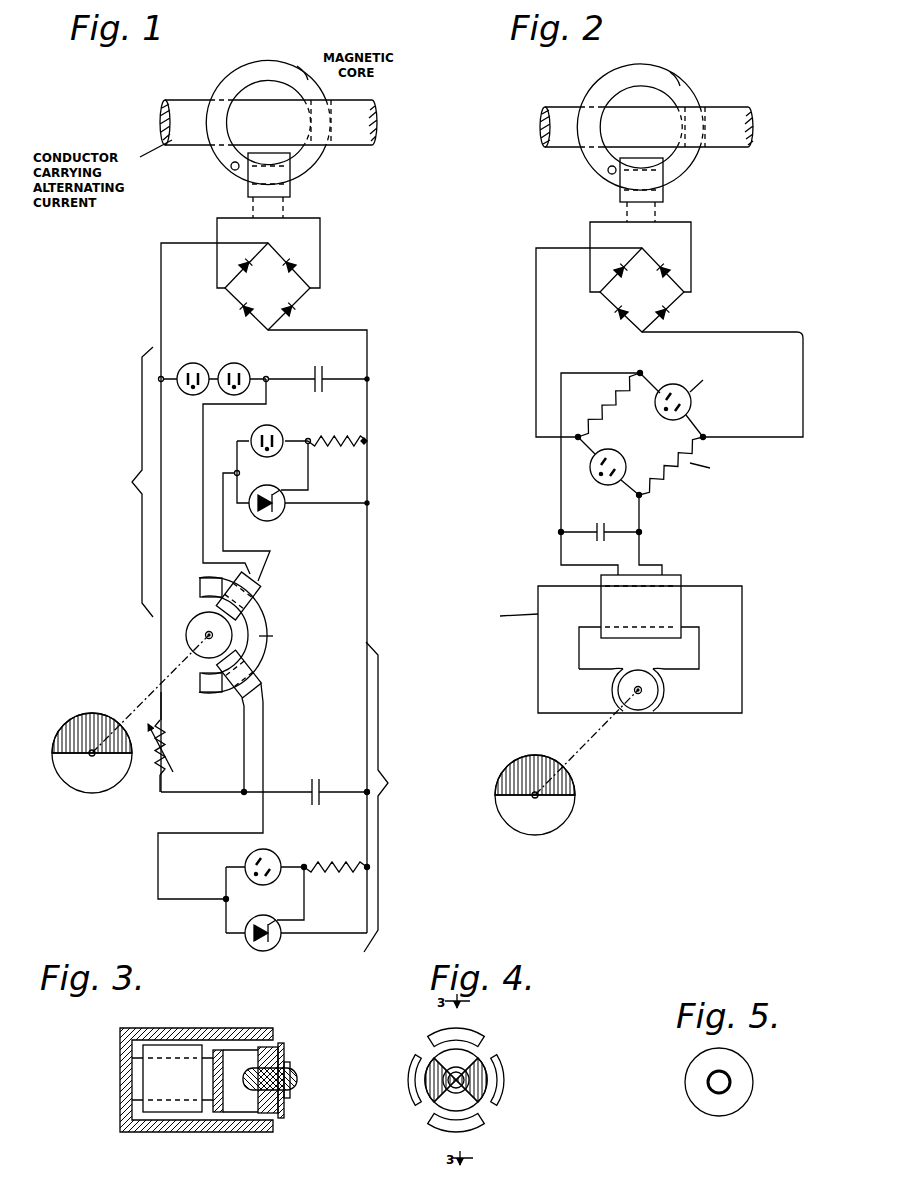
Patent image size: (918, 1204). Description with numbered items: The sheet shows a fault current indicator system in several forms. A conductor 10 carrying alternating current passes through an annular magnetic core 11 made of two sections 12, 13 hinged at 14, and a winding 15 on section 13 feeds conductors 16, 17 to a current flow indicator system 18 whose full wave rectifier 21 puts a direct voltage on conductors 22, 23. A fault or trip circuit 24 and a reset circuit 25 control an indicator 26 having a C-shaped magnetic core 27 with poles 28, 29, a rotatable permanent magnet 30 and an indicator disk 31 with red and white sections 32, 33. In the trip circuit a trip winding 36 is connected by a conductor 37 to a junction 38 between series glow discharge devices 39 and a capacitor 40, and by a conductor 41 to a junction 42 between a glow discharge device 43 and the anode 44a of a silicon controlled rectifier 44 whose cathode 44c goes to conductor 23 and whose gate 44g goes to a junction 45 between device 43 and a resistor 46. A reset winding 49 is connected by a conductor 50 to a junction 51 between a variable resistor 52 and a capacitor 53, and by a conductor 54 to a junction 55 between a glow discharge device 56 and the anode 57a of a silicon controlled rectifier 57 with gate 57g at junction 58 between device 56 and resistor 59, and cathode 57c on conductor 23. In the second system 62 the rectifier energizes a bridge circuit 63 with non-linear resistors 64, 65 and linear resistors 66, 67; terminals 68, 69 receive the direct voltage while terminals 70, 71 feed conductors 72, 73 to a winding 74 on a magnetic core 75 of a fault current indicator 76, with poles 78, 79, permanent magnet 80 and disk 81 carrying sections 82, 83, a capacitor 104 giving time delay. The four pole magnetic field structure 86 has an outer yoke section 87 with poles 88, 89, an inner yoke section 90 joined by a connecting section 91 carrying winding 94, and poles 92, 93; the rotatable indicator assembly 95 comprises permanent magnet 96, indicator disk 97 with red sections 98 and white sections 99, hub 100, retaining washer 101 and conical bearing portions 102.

In FIG. 1, the conductor 10 is at (180, 108).
In FIG. 2, the conductor 10 is at (726, 107).
In FIG. 1, the annular magnetic core 11 is at (244, 42).
In FIG. 2, the annular magnetic core 11 is at (586, 80).
In FIG. 1, the core section 12 is at (277, 62).
In FIG. 2, the core section 12 is at (666, 72).
In FIG. 1, the core section 13 is at (315, 158).
In FIG. 2, the core section 13 is at (684, 162).
In FIG. 1, the hinge 14 is at (231, 168).
In FIG. 2, the hinge 14 is at (607, 174).
In FIG. 1, the winding 15 is at (292, 192).
In FIG. 2, the winding 15 is at (665, 191).
In FIG. 1, the conductor 16 is at (217, 228).
In FIG. 2, the conductor 16 is at (590, 232).
In FIG. 1, the conductor 17 is at (320, 232).
In FIG. 2, the conductor 17 is at (692, 240).
In FIG. 1, the current flow indicator system 18 is at (371, 300).
In FIG. 1, the full wave rectifier 21 is at (301, 303).
In FIG. 2, the full wave rectifier 21 is at (681, 306).
In FIG. 1, the conductor 22 is at (159, 288).
In FIG. 2, the conductor 22 is at (535, 304).
In FIG. 1, the conductor 23 is at (370, 410).
In FIG. 2, the conductor 23 is at (760, 336).
In FIG. 1, the fault or trip circuit 24 is at (125, 425).
In FIG. 1, the reset circuit 25 is at (397, 742).
In FIG. 1, the indicator 26 is at (156, 639).
In FIG. 1, the magnetic core 27 is at (265, 659).
In FIG. 1, the pole 28 is at (200, 585).
In FIG. 1, the pole 29 is at (200, 688).
In FIG. 1, the permanent magnet 30 is at (186, 626).
In FIG. 1, the indicator disk 31 is at (89, 796).
In FIG. 1, the red section 32 is at (80, 729).
In FIG. 1, the white section 33 is at (72, 768).
In FIG. 1, the trip winding 36 is at (262, 585).
In FIG. 1, the conductor 37 is at (203, 464).
In FIG. 1, the junction 38 is at (268, 376).
In FIG. 1, the glow discharge devices 39 is at (228, 365).
In FIG. 1, the capacitor 40 is at (320, 367).
In FIG. 1, the conductor 41 is at (222, 480).
In FIG. 1, the junction 42 is at (240, 474).
In FIG. 1, the glow discharge device 43 is at (278, 432).
In FIG. 1, the silicon controlled rectifier 44 is at (280, 532).
In FIG. 1, the anode 44a is at (256, 508).
In FIG. 1, the cathode 44c is at (285, 512).
In FIG. 1, the gate 44g is at (272, 497).
In FIG. 1, the junction 45 is at (311, 444).
In FIG. 1, the resistor 46 is at (337, 437).
In FIG. 1, the reset winding 49 is at (265, 689).
In FIG. 1, the conductor 50 is at (243, 738).
In FIG. 1, the junction 51 is at (242, 795).
In FIG. 1, the variable resistor 52 is at (167, 751).
In FIG. 1, the capacitor 53 is at (316, 778).
In FIG. 1, the conductor 54 is at (265, 748).
In FIG. 1, the junction 55 is at (223, 897).
In FIG. 1, the glow discharge device 56 is at (272, 856).
In FIG. 1, the silicon controlled rectifier 57 is at (248, 948).
In FIG. 1, the anode 57a is at (246, 893).
In FIG. 1, the gate 57g is at (276, 919).
In FIG. 1, the cathode 57c is at (283, 946).
In FIG. 1, the junction 58 is at (307, 863).
In FIG. 1, the resistor 59 is at (338, 876).
In FIG. 2, the current flow indicator system 62 is at (757, 264).
In FIG. 2, the bridge circuit 63 is at (584, 368).
In FIG. 2, the non-linear resistor 64 is at (668, 385).
In FIG. 2, the non-linear resistor 65 is at (601, 484).
In FIG. 2, the linear resistor 66 is at (596, 410).
In FIG. 2, the linear resistor 67 is at (666, 472).
In FIG. 2, the bridge terminal 68 is at (582, 437).
In FIG. 2, the bridge terminal 69 is at (705, 435).
In FIG. 2, the bridge terminal 70 is at (637, 372).
In FIG. 2, the bridge terminal 71 is at (640, 490).
In FIG. 2, the conductor 72 is at (559, 494).
In FIG. 2, the conductor 73 is at (655, 566).
In FIG. 2, the winding 74 is at (672, 597).
In FIG. 2, the magnetic core 75 is at (737, 608).
In FIG. 2, the fault current indicator 76 is at (745, 656).
In FIG. 2, the pole 78 is at (603, 668).
In FIG. 2, the pole 79 is at (682, 668).
In FIG. 2, the permanent magnet 80 is at (645, 710).
In FIG. 2, the indicator disk 81 is at (577, 813).
In FIG. 2, the red section 82 is at (530, 766).
In FIG. 2, the white section 83 is at (546, 826).
In FIG. 3, the magnetic field structure 86 is at (114, 1132).
In FIG. 3, the outer yoke section 87 is at (128, 1030).
In FIG. 3, the pole 88 is at (272, 1033).
In FIG. 4, the pole 88 is at (476, 1032).
In FIG. 3, the pole 89 is at (270, 1134).
In FIG. 4, the pole 89 is at (446, 1132).
In FIG. 3, the inner yoke section 90 is at (213, 1115).
In FIG. 3, the connecting section 91 is at (135, 1070).
In FIG. 4, the pole 92 is at (414, 1096).
In FIG. 3, the pole 93 is at (236, 1105).
In FIG. 4, the pole 93 is at (500, 1098).
In FIG. 3, the winding 94 is at (192, 1045).
In FIG. 3, the rotatable indicator assembly 95 is at (293, 1100).
In FIG. 4, the rotatable indicator assembly 95 is at (487, 1115).
In FIG. 3, the permanent magnet 96 is at (266, 1122).
In FIG. 4, the permanent magnet 96 is at (456, 1080).
In FIG. 5, the permanent magnet 96 is at (695, 1105).
In FIG. 3, the indicator disk 97 is at (285, 1052).
In FIG. 4, the indicator disk 97 is at (485, 1052).
In FIG. 4, the red sections 98 is at (432, 1064).
In FIG. 4, the white sections 99 is at (446, 1052).
In FIG. 3, the hub 100 is at (211, 1077).
In FIG. 3, the retaining washer 101 is at (250, 1058).
In FIG. 3, the conical bearing portions 102 is at (245, 1075).
In FIG. 2, the capacitor 104 is at (601, 540).